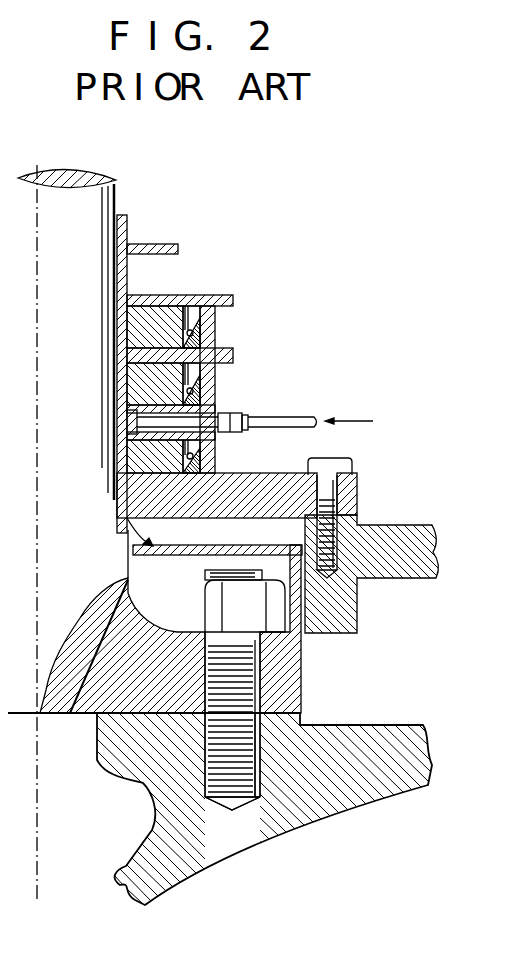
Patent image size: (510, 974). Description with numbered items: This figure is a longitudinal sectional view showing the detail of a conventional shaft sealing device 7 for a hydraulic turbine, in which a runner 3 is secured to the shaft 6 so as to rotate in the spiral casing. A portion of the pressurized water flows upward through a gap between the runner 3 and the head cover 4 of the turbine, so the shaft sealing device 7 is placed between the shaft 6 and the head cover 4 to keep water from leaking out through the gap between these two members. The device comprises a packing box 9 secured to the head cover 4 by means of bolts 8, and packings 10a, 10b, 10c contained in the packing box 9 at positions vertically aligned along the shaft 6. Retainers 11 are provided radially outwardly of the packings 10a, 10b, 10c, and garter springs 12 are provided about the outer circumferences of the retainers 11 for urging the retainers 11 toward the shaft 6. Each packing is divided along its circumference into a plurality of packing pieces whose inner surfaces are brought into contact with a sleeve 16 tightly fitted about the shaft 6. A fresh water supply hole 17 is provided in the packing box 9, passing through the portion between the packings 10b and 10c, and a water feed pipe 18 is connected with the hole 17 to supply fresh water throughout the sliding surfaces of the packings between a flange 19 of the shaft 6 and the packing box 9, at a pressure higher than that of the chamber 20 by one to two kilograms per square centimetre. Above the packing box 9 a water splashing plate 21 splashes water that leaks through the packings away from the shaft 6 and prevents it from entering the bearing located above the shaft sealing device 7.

The runner 3 is at (386, 738).
The head cover 4 is at (393, 540).
The shaft 6 is at (97, 205).
The shaft sealing device 7 is at (232, 295).
The bolts 8 is at (323, 462).
The packing box 9 is at (237, 412).
The packing 10a is at (128, 322).
The packing 10b is at (130, 388).
The packing 10c is at (132, 460).
The retainers 11 is at (185, 327).
The garter springs 12 is at (192, 337).
The sleeve 16 is at (117, 521).
The fresh water supply hole 17 is at (213, 410).
The water feed pipe 18 is at (289, 418).
The flange 19 is at (283, 695).
The chamber 20 is at (203, 532).
The water splashing plate 21 is at (150, 244).